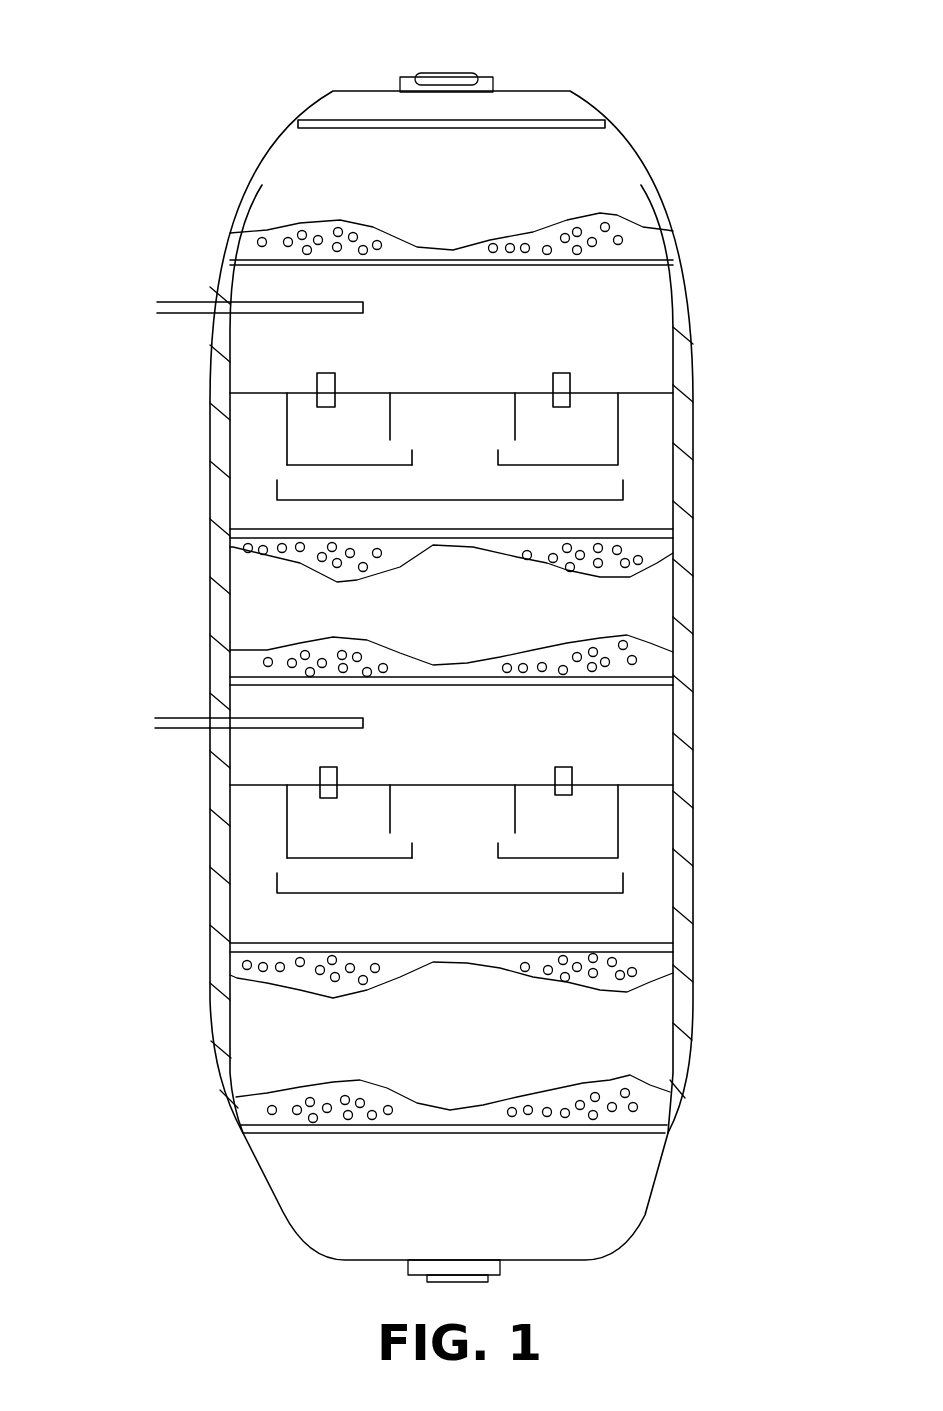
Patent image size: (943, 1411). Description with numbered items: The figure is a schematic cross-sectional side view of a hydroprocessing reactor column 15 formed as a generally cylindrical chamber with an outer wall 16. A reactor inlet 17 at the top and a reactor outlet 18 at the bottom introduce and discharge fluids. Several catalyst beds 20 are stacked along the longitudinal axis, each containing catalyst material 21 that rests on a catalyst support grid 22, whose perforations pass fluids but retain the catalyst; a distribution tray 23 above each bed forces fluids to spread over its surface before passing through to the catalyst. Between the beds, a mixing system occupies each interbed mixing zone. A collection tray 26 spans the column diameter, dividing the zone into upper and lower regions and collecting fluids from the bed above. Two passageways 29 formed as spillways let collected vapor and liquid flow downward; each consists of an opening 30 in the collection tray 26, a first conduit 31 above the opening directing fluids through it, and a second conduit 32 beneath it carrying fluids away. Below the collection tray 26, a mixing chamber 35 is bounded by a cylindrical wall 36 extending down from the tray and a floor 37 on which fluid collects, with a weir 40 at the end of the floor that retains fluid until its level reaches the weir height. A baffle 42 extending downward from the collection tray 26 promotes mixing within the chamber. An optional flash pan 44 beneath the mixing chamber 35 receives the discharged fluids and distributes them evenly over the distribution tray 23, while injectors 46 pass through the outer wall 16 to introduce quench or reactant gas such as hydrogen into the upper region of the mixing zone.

The reactor column 15 is at (700, 181).
The outer wall 16 is at (217, 448).
The reactor inlet 17 is at (467, 73).
The reactor outlet 18 is at (480, 1282).
The catalyst bed 20 is at (524, 201).
The catalyst material 21 is at (263, 237).
The catalyst support grid 22 is at (673, 265).
The distribution tray 23 is at (598, 118).
The collection tray 26 is at (447, 393).
The passageway 29 is at (332, 365).
The opening 30 is at (336, 393).
The first conduit 31 is at (318, 385).
The second conduit 32 is at (326, 407).
The mixing chamber 35 is at (630, 413).
The cylindrical wall 36 is at (287, 413).
The floor 37 is at (290, 472).
The weir 40 is at (410, 452).
The baffle 42 is at (518, 411).
The flash pan 44 is at (360, 493).
The injector 46 is at (180, 300).